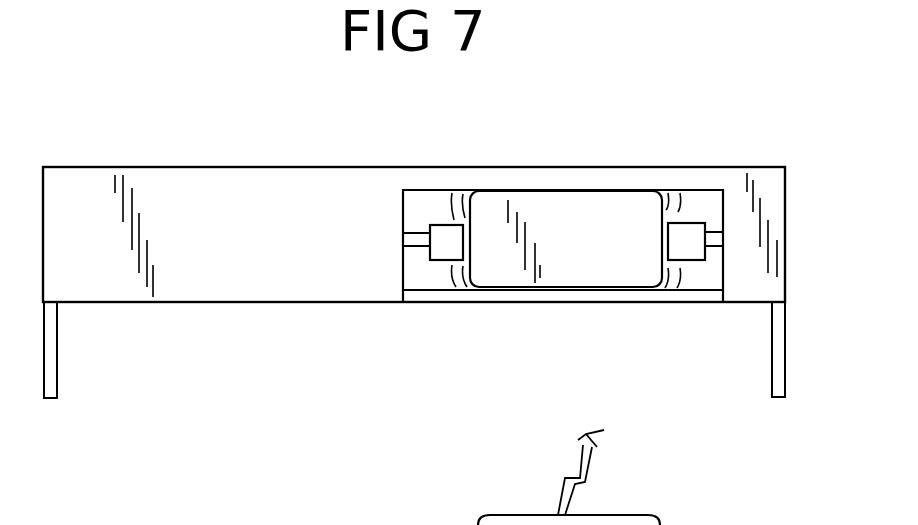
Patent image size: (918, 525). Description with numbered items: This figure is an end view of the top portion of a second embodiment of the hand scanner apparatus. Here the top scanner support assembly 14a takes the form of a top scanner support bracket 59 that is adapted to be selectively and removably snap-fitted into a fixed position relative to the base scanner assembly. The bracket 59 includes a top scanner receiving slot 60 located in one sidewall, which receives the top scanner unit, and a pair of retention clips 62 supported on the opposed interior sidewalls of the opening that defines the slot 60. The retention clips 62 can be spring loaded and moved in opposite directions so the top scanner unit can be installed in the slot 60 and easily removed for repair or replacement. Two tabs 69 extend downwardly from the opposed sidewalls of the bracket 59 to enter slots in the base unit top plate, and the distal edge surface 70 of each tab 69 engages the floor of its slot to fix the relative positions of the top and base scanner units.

The top scanner support assembly 14a is at (250, 162).
The top scanner support bracket 59 is at (278, 272).
The top scanner receiving slot 60 is at (723, 200).
The retention clips 62 is at (443, 248).
The tabs 69 is at (57, 346).
The distal edge surface 70 is at (52, 398).